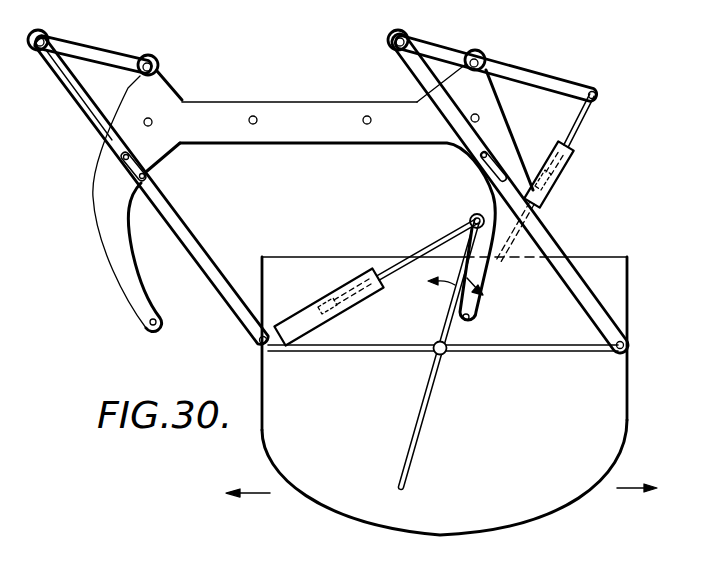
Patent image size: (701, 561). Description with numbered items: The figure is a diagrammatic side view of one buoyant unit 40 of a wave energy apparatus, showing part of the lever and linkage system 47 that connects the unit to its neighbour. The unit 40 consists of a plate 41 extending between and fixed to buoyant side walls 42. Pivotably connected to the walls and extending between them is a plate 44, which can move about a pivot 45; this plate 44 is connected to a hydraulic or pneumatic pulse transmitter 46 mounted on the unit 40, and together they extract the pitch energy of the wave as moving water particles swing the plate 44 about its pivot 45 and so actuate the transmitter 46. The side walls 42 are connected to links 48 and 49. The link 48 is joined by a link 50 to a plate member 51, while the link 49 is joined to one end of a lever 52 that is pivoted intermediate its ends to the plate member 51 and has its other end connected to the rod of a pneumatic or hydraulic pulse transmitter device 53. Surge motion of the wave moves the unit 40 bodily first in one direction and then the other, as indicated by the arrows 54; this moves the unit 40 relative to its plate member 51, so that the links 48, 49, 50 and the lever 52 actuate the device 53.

The buoyant unit 40 is at (627, 268).
The plate 41 is at (577, 352).
The buoyant side wall 42 is at (540, 511).
The plate 44 is at (414, 461).
The pivot 45 is at (444, 356).
The hydraulic or pneumatic pulse transmitter 46 is at (310, 313).
The linkage system 47 is at (300, 56).
The link 48 is at (227, 297).
The link 49 is at (569, 277).
The link 50 is at (103, 63).
The plate member 51 is at (201, 113).
The lever 52 is at (519, 73).
The pneumatic or hydraulic pulse transmitter device 53 is at (557, 188).
The arrows 54 is at (266, 492).